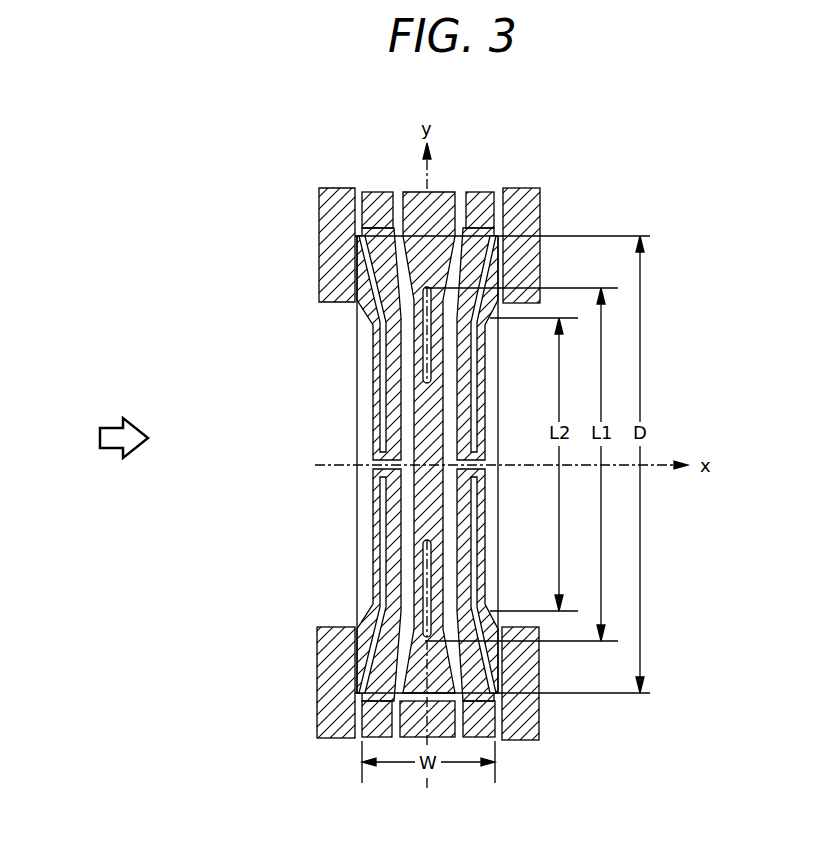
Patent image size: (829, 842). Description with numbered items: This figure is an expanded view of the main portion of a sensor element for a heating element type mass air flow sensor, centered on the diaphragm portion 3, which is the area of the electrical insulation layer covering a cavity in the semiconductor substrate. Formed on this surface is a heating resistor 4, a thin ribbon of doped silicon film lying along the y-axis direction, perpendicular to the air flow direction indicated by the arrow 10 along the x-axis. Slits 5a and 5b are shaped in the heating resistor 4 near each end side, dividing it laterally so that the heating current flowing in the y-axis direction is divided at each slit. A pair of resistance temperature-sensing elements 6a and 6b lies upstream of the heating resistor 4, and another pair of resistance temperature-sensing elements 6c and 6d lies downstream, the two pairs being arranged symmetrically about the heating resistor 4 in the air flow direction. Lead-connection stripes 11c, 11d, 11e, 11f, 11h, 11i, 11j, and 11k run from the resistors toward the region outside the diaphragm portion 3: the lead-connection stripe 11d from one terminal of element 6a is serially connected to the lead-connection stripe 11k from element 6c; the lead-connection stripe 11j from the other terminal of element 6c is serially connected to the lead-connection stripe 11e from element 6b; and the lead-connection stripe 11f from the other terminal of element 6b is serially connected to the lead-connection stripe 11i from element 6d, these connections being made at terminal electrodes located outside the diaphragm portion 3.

The diaphragm portion 3 is at (365, 495).
The heating resistor 4 is at (427, 415).
The slit 5a is at (428, 333).
The slit 5b is at (428, 605).
The resistance temperature-sensing element 6a is at (372, 428).
The resistance temperature-sensing element 6b is at (375, 567).
The resistance temperature-sensing element 6c is at (482, 398).
The resistance temperature-sensing element 6d is at (483, 550).
The arrow 10 is at (110, 437).
The lead-connection stripe 11c is at (333, 220).
The lead-connection stripe 11d is at (337, 278).
The lead-connection stripe 11e is at (335, 685).
The lead-connection stripe 11f is at (362, 748).
The lead-connection stripe 11h is at (497, 742).
The lead-connection stripe 11i is at (523, 672).
The lead-connection stripe 11j is at (528, 212).
The lead-connection stripe 11k is at (487, 198).